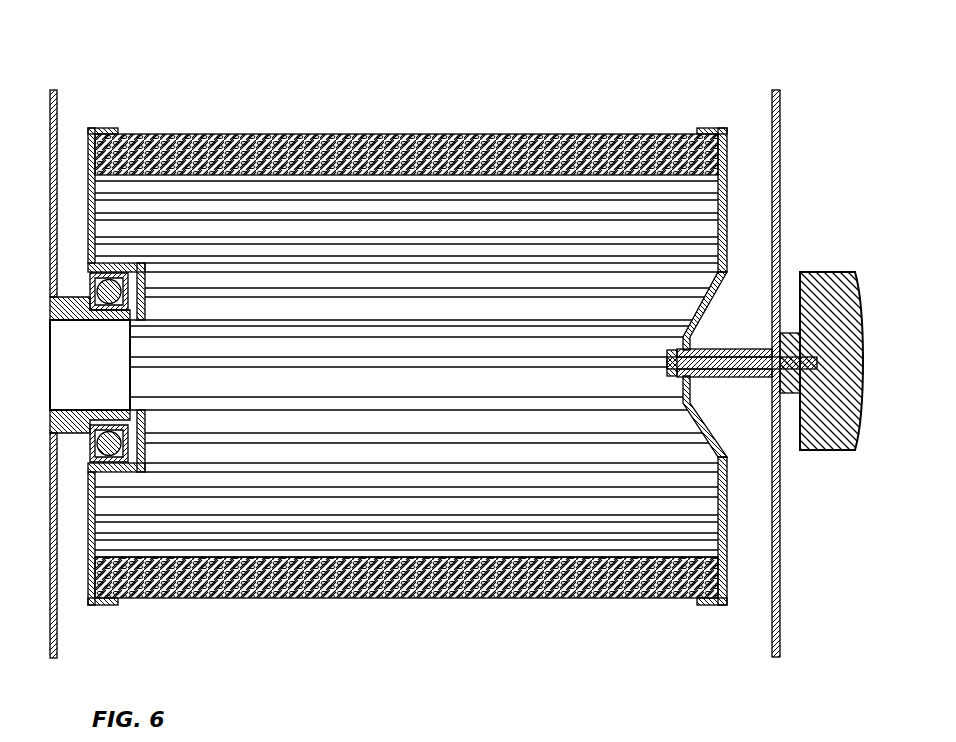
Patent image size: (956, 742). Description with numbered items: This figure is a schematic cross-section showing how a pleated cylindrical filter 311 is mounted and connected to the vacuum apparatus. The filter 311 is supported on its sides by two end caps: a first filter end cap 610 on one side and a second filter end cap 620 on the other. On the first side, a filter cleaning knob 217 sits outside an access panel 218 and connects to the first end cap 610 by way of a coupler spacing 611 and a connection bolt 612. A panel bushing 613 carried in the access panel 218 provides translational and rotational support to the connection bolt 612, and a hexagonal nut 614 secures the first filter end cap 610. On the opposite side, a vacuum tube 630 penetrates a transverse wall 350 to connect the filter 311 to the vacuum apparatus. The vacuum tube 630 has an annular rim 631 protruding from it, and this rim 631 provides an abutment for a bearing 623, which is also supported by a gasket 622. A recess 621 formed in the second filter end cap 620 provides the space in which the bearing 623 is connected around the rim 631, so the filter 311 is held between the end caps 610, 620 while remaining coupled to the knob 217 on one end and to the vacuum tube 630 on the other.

The transverse wall 350 is at (55, 90).
The access panel 218 is at (778, 90).
The second filter end cap 620 is at (86, 572).
The first filter end cap 610 is at (737, 596).
The pleated cylindrical filter 311 is at (505, 598).
The vacuum tube 630 is at (55, 319).
The annular rim 631 is at (57, 298).
The gasket 622 is at (130, 412).
The bearing 623 is at (90, 287).
The recess 621 is at (137, 483).
The panel bushing 613 is at (772, 348).
The coupler spacing 611 is at (733, 378).
The connection bolt 612 is at (707, 357).
The hexagonal nut 614 is at (673, 350).
The filter cleaning knob 217 is at (827, 450).